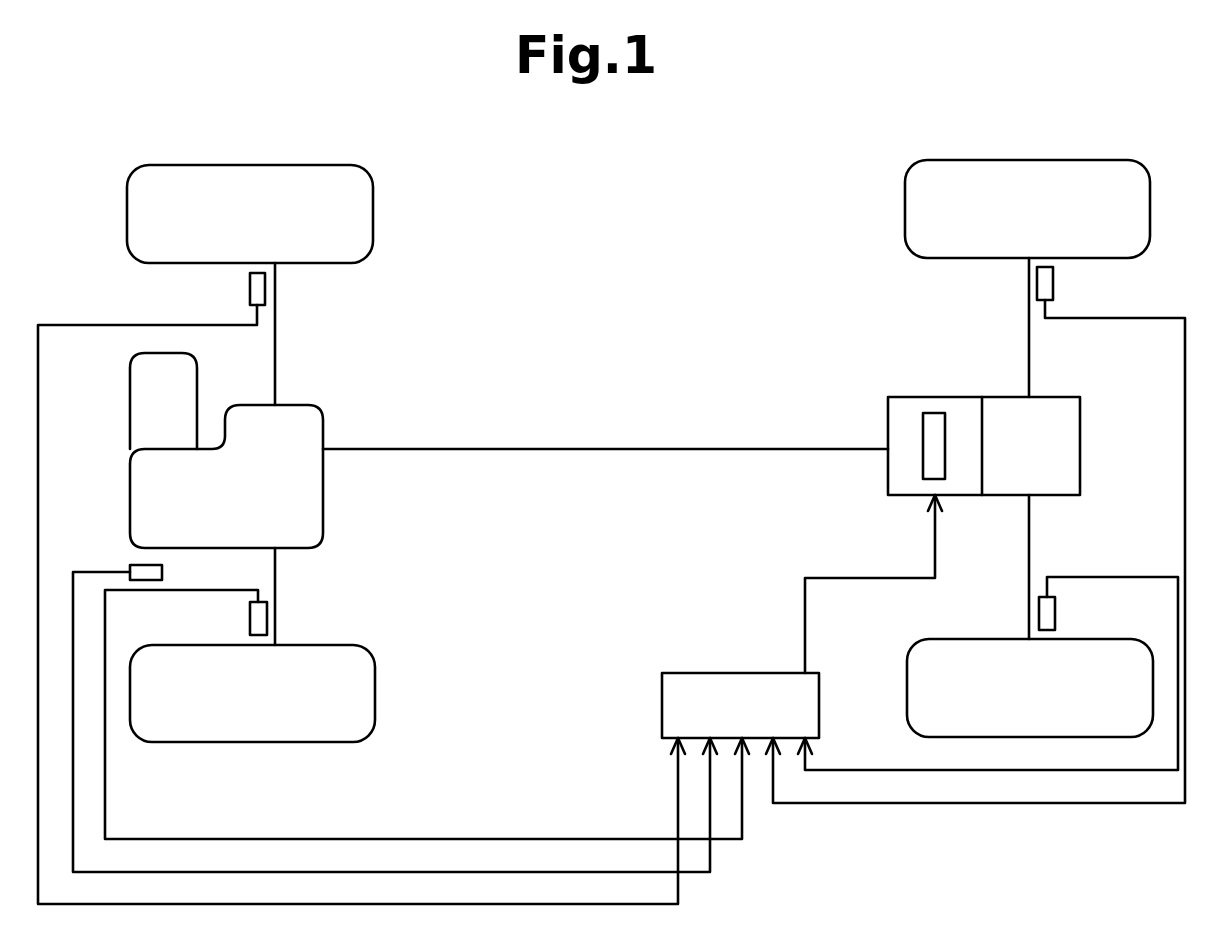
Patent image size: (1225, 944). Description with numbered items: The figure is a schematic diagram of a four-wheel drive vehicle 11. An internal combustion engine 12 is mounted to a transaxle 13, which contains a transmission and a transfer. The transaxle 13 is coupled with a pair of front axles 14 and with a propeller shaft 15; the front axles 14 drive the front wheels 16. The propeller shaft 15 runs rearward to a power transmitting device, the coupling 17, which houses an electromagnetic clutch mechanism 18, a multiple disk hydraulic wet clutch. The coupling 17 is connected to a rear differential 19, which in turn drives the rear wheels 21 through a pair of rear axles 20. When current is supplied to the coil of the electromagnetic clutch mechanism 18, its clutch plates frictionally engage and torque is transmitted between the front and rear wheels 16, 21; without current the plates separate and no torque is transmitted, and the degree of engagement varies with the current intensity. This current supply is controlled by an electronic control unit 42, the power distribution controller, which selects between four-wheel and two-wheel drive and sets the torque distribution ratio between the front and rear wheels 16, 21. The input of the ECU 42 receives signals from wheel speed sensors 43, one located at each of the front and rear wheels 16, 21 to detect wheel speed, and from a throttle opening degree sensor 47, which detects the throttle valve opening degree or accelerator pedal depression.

The four-wheel drive vehicle 11 is at (1025, 112).
The engine 12 is at (129, 400).
The transaxle 13 is at (130, 495).
The front axles 14 is at (276, 340).
The propeller shaft 15 is at (378, 448).
The front wheels 16 is at (127, 213).
The coupling 17 is at (933, 403).
The electromagnetic clutch mechanism 18 is at (922, 423).
The rear differential 19 is at (1066, 452).
The rear axles 20 is at (1031, 357).
The rear wheels 21 is at (905, 200).
The electronic control unit (ECU) 42 is at (820, 720).
The wheel speed sensors 43 is at (250, 288).
The throttle opening degree sensor 47 is at (165, 571).